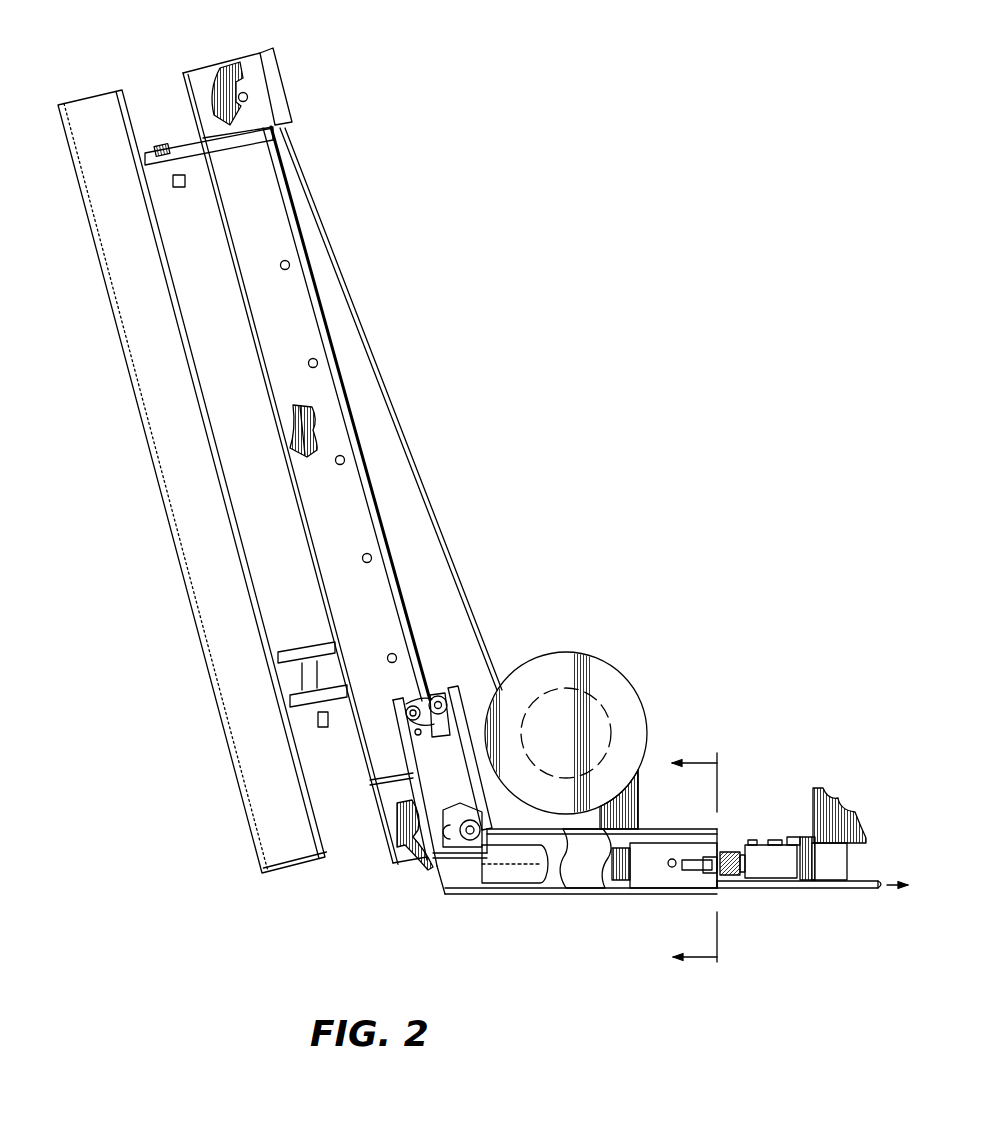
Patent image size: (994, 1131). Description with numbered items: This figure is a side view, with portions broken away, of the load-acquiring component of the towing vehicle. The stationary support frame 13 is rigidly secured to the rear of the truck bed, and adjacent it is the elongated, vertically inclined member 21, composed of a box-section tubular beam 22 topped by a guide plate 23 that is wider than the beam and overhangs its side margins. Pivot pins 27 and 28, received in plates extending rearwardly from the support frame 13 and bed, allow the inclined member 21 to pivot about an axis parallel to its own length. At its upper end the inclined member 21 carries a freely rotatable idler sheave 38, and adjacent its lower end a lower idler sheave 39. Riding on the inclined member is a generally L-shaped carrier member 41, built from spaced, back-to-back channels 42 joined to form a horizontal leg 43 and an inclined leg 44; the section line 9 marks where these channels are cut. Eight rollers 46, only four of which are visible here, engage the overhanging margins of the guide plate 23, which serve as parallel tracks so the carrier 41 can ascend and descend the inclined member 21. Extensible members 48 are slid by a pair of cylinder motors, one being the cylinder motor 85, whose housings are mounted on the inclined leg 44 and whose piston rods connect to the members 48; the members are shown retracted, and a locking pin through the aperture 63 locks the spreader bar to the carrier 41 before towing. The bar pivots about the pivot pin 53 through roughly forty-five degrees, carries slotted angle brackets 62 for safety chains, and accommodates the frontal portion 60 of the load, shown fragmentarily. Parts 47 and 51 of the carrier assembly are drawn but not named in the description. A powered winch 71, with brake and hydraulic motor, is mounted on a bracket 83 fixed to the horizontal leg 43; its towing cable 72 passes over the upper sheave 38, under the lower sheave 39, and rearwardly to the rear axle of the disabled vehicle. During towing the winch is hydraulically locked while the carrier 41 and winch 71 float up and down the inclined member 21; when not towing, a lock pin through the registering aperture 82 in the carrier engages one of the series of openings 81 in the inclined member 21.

The support frame 13 is at (135, 510).
The inclined member 21 is at (391, 256).
The tubular beam 22 is at (337, 432).
The guide plate 23 is at (347, 397).
The pivot pin 27 is at (178, 186).
The pivot pin 28 is at (315, 723).
The idler cable sheave 38 is at (217, 82).
The idler sheave 39 is at (407, 827).
The carrier member 41 is at (677, 725).
The channels 42 is at (647, 805).
The horizontal leg 43 is at (543, 915).
The inclined leg 44 is at (475, 680).
The rollers 46 is at (439, 702).
The block 47 is at (655, 870).
The extensible members 48 is at (587, 880).
The actuator 51 is at (768, 858).
The pivot pin 53 is at (778, 840).
The frontal portion of load 60 is at (830, 820).
The angle brackets 62 is at (795, 840).
The aperture 63 is at (672, 870).
The powered winch 71 is at (593, 678).
The towing cable 72 is at (296, 424).
The openings 81 is at (283, 266).
The aperture 82 is at (416, 735).
The bracket 83 is at (627, 803).
The cylinder motor 85 is at (513, 870).
The section line 9- 9 is at (705, 861).